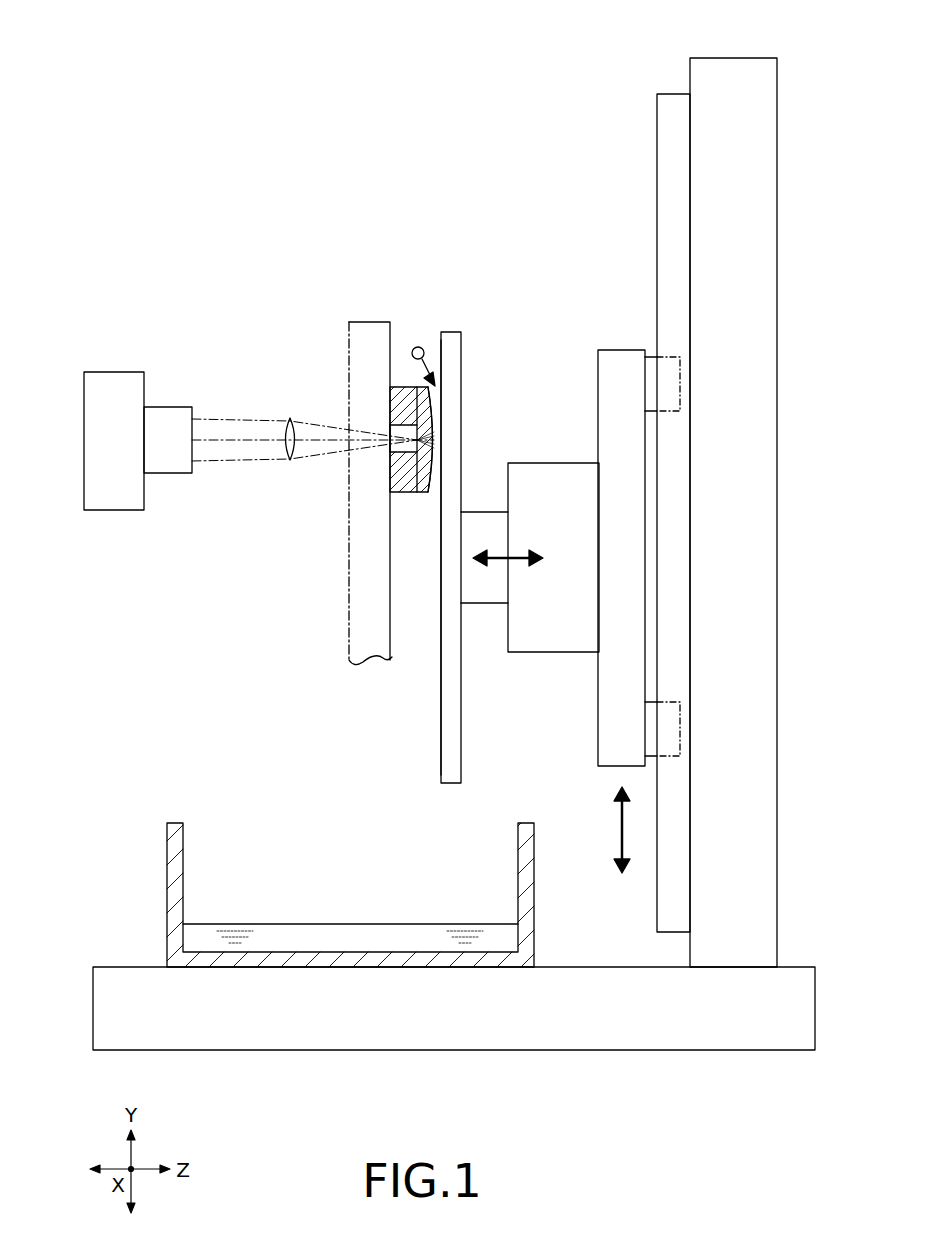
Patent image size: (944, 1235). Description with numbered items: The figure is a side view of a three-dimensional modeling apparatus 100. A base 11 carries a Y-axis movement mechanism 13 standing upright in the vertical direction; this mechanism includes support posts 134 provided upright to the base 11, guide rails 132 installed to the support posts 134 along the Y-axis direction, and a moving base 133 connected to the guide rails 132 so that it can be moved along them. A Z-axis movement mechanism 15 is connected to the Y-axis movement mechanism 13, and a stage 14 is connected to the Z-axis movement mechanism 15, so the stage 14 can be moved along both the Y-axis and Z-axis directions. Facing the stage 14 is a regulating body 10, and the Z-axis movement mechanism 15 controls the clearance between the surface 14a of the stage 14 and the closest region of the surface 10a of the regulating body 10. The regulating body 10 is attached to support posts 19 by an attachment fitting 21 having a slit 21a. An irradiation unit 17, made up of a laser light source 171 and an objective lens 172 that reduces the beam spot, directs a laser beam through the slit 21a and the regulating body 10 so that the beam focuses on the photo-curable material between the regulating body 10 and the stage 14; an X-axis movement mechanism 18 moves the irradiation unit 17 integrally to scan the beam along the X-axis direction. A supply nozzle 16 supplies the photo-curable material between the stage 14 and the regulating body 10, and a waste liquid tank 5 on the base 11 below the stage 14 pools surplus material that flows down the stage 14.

The three-dimensional modeling apparatus 100 is at (354, 72).
The waste liquid tank 5 is at (172, 887).
The regulating body 10 is at (424, 493).
The surface of the regulating body 10a is at (434, 400).
The base 11 is at (424, 1051).
The Y-axis movement mechanism 13 is at (630, 100).
The guide rails 132 is at (657, 137).
The moving base 133 is at (620, 354).
The support posts 134 is at (777, 213).
The stage 14 is at (457, 703).
The surface of the stage 14a is at (441, 748).
The Z-axis movement mechanism 15 is at (565, 462).
The supply nozzle 16 is at (419, 346).
The irradiation unit 17 is at (158, 362).
The laser light source 171 is at (181, 408).
The objective lens 172 is at (290, 417).
The X-axis movement mechanism 18 is at (113, 378).
The support posts 19 is at (353, 629).
The attachment fitting 21 is at (391, 487).
The slit 21a is at (390, 443).